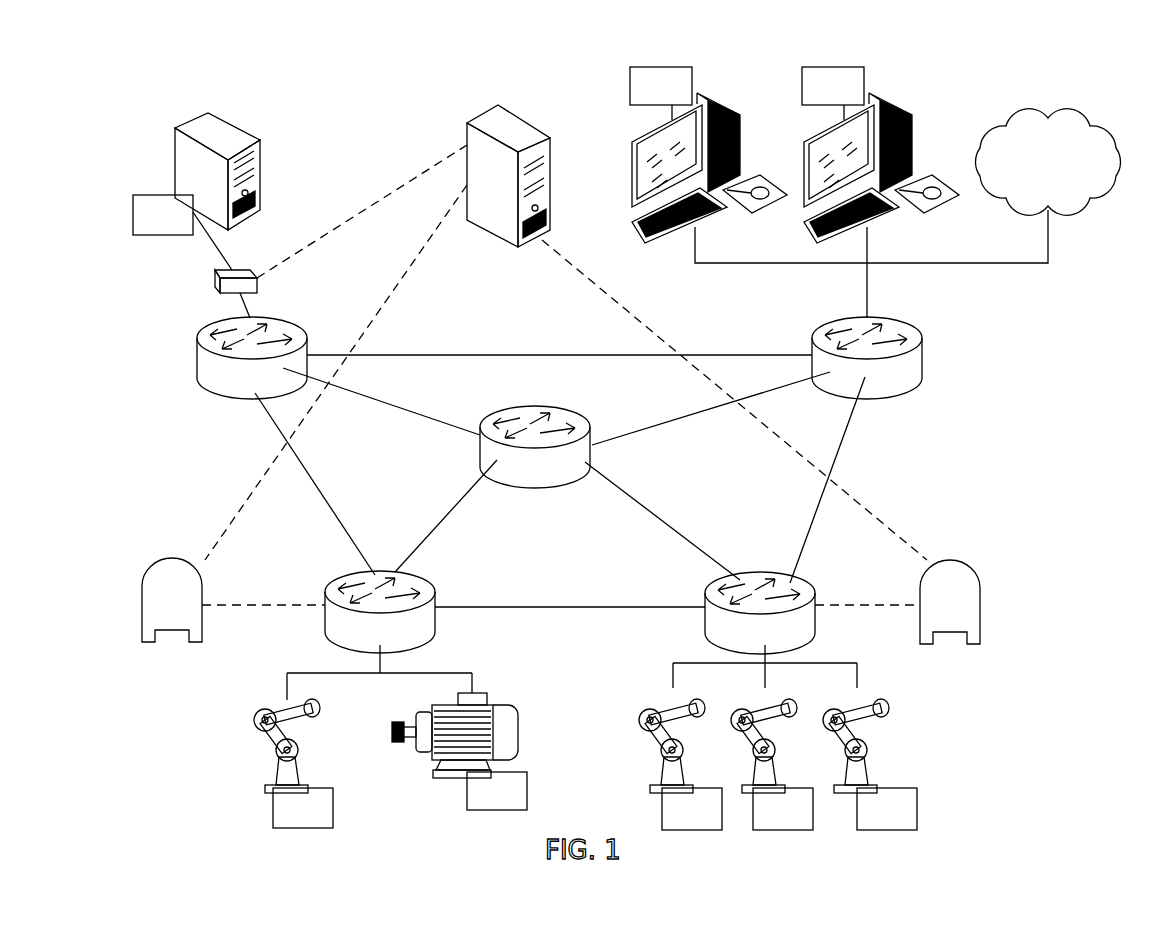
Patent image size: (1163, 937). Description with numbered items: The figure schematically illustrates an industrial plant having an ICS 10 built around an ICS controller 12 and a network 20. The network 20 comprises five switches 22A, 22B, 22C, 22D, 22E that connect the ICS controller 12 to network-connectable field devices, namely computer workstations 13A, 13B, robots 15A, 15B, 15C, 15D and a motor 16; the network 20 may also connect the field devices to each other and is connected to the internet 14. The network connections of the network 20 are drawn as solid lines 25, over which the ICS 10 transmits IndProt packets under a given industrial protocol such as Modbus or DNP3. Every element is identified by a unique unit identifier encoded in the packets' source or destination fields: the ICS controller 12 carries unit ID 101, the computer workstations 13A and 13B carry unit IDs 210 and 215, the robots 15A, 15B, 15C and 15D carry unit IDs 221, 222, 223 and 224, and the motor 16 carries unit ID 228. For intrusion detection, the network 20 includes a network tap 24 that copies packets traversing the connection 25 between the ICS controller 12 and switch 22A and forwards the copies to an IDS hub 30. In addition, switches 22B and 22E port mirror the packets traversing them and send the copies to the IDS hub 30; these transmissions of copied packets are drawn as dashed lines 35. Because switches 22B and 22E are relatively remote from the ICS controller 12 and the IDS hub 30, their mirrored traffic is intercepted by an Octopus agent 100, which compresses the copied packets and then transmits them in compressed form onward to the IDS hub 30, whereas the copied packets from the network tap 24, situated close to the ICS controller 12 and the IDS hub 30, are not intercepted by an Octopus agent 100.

The ICS 10 is at (1063, 383).
The network 20 is at (1063, 455).
The ICS controller 12 is at (175, 148).
The unit ID of ICS controller 101 is at (182, 232).
The network tap 24 is at (218, 288).
The network connections 25 is at (215, 275).
The IDS hub 30 is at (537, 118).
The dashed lines 35 is at (873, 518).
The computer workstation 13A is at (715, 117).
The computer workstation 13B is at (895, 113).
The unit ID of computer workstation 13A 210 is at (661, 93).
The unit ID of computer workstation 13B 215 is at (833, 93).
The internet 14 is at (1098, 116).
The switch 22A is at (204, 373).
The switch 22B is at (322, 622).
The switch 22C is at (530, 483).
The switch 22D is at (897, 322).
The switch 22E is at (793, 580).
The Octopus agent 100 is at (142, 607).
The robot 15A is at (270, 765).
The robot 15B is at (660, 765).
The robot 15C is at (780, 765).
The robot 15D is at (873, 765).
The motor 16 is at (440, 775).
The unit ID of robot 15A 221 is at (303, 808).
The unit ID of robot 15B 222 is at (692, 809).
The unit ID of robot 15C 223 is at (783, 809).
The unit ID of robot 15D 224 is at (887, 809).
The unit ID of motor 16 228 is at (497, 791).